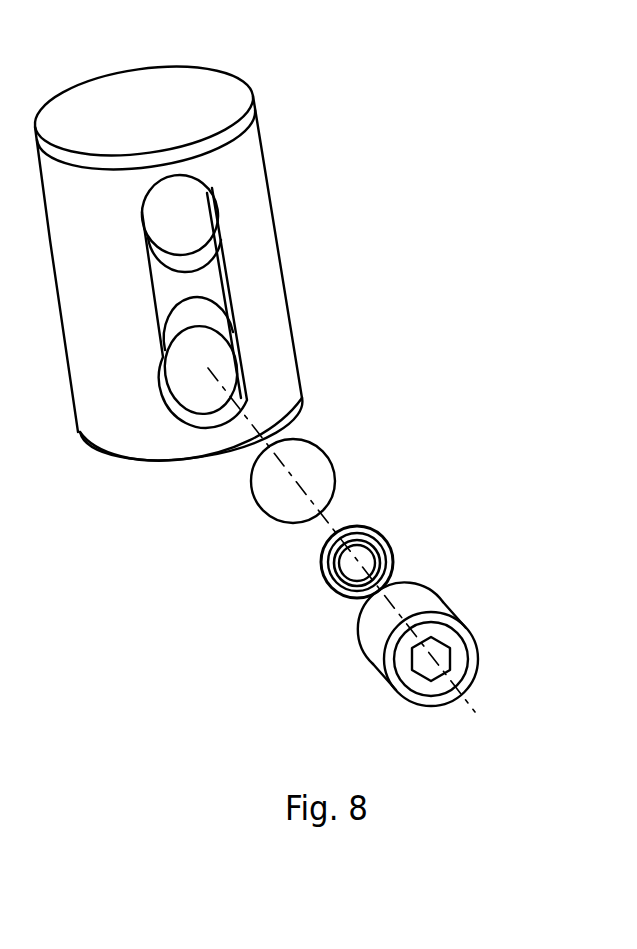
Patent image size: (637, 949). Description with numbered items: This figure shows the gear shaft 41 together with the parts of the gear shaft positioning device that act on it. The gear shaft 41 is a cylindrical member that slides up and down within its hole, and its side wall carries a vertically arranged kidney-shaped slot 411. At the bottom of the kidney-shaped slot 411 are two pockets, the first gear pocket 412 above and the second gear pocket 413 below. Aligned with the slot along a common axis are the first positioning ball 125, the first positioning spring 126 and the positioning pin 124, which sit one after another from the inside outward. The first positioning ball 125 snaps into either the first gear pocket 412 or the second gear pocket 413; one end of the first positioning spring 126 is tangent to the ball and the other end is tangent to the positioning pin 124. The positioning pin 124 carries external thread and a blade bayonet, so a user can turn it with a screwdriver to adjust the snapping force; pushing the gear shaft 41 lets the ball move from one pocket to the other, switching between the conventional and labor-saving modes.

The gear shaft 41 is at (198, 97).
The kidney-shaped slot 411 is at (213, 292).
The first gear pocket 412 is at (192, 217).
The second gear pocket 413 is at (220, 365).
The first positioning ball 125 is at (262, 498).
The first positioning spring 126 is at (333, 575).
The positioning pin 124 is at (380, 657).